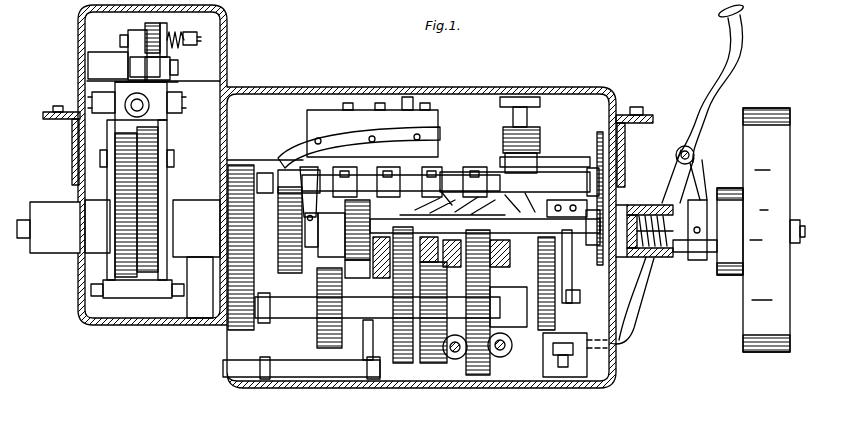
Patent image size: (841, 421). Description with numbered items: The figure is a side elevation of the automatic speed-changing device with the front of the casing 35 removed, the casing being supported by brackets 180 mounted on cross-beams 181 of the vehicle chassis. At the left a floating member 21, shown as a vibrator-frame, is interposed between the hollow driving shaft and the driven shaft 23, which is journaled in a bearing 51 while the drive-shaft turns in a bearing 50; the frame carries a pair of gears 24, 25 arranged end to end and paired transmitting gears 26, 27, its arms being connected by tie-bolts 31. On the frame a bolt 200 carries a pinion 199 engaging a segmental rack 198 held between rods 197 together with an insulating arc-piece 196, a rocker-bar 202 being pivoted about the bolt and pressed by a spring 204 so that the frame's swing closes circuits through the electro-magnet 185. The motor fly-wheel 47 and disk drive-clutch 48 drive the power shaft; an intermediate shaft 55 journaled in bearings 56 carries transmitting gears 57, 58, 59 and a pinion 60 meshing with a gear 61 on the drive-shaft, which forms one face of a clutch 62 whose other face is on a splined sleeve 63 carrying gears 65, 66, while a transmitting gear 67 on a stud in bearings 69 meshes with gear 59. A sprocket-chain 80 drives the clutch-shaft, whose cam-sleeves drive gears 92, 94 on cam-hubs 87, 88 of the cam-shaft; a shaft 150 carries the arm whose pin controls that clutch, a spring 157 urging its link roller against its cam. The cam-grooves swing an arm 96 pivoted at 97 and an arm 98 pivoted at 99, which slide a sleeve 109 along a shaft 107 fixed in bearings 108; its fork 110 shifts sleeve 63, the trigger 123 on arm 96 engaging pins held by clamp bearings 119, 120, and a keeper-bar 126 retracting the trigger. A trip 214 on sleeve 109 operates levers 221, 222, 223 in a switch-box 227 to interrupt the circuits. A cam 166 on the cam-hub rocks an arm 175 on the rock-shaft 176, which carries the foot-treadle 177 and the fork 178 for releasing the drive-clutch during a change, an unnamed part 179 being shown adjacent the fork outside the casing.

The floating member 21 is at (168, 122).
The driven shaft 23 is at (22, 218).
The gear 24 is at (147, 300).
The gear 25 is at (125, 290).
The transmitting gear 26 is at (150, 145).
The transmitting gear 27 is at (125, 142).
The tie-bolt 31 is at (135, 300).
The casing 35 is at (340, 95).
The fly-wheel 47 is at (765, 352).
The drive-clutch 48 is at (730, 276).
The bearing 50 is at (152, 259).
The bearing 51 is at (66, 253).
The intermediate shaft 55 is at (285, 318).
The bearing 56 is at (202, 318).
The transmitting gear 57 is at (318, 340).
The transmitting gear 58 is at (428, 330).
The transmitting gear 59 is at (497, 360).
The transmitting pinion 60 is at (243, 330).
The gear 61 is at (220, 188).
The clutch 62 is at (286, 265).
The sleeve 63 is at (325, 235).
The gear 65 is at (262, 150).
The gear 66 is at (345, 250).
The transmitting gear 67 is at (482, 234).
The bearing 69 is at (520, 235).
The sprocket-chain 80 is at (598, 135).
The cam-hub 87 is at (592, 246).
The cam-hub 88 is at (367, 257).
The gear 92 is at (556, 283).
The gear 94 is at (394, 295).
The arm 96 is at (555, 378).
The pivot 97 is at (530, 378).
The arm 98 is at (380, 370).
The pivot 99 is at (455, 358).
The shaft 107 is at (552, 172).
The bearing 108 is at (265, 170).
The sleeve 109 is at (450, 175).
The fork 110 is at (283, 160).
The clamp bearing 119 is at (362, 125).
The clamp bearing 120 is at (395, 100).
The trigger 123 is at (480, 130).
The keeper-bar 126 is at (483, 205).
The shaft 150 is at (472, 165).
The spring 157 is at (572, 378).
The cam 166 is at (578, 290).
The arm 175 is at (634, 318).
The rock-shaft 176 is at (678, 148).
The clutch-operating foot-treadle 177 is at (735, 38).
The fork 178 is at (700, 185).
The rod 179 is at (703, 260).
The bracket 180 is at (72, 112).
The cross-beam 181 is at (72, 130).
The electro-magnet 185 is at (510, 110).
The arc-piece 196 is at (166, 80).
The rod 197 is at (124, 63).
The segmental rack 198 is at (152, 72).
The pinion 199 is at (128, 33).
The bolt 200 is at (201, 38).
The rocker-bar 202 is at (162, 28).
The spring 204 is at (178, 55).
The trip 214 is at (372, 127).
The lever 221 is at (308, 165).
The lever 222 is at (380, 95).
The lever 223 is at (425, 100).
The switch-box 227 is at (312, 108).